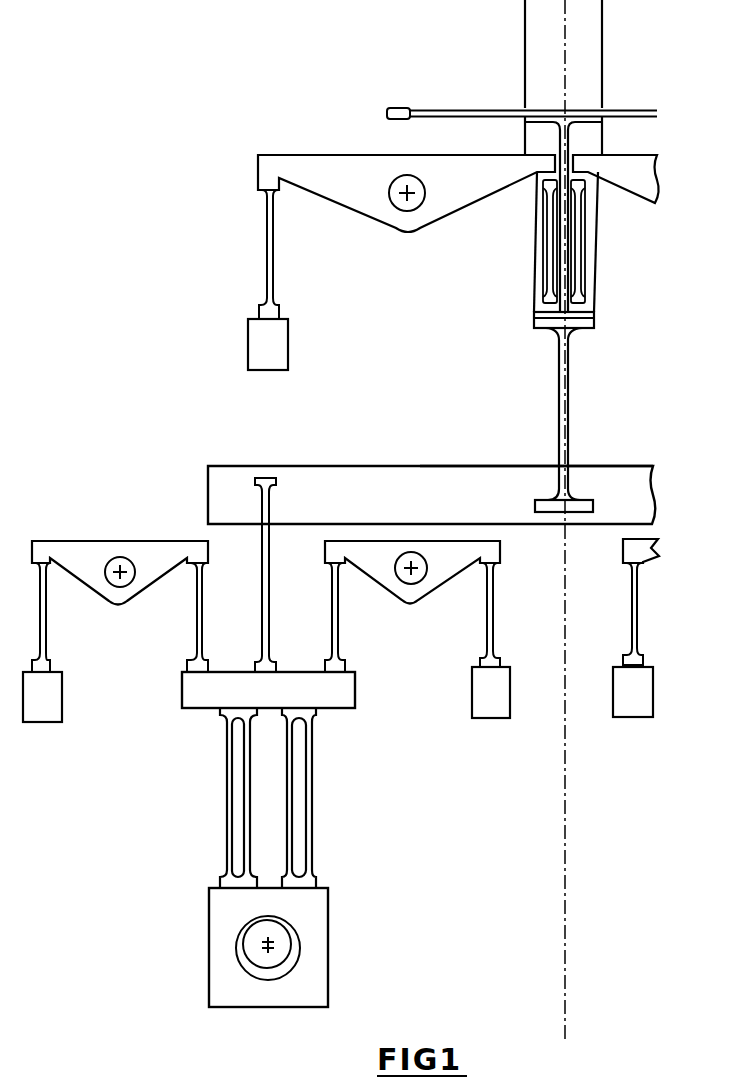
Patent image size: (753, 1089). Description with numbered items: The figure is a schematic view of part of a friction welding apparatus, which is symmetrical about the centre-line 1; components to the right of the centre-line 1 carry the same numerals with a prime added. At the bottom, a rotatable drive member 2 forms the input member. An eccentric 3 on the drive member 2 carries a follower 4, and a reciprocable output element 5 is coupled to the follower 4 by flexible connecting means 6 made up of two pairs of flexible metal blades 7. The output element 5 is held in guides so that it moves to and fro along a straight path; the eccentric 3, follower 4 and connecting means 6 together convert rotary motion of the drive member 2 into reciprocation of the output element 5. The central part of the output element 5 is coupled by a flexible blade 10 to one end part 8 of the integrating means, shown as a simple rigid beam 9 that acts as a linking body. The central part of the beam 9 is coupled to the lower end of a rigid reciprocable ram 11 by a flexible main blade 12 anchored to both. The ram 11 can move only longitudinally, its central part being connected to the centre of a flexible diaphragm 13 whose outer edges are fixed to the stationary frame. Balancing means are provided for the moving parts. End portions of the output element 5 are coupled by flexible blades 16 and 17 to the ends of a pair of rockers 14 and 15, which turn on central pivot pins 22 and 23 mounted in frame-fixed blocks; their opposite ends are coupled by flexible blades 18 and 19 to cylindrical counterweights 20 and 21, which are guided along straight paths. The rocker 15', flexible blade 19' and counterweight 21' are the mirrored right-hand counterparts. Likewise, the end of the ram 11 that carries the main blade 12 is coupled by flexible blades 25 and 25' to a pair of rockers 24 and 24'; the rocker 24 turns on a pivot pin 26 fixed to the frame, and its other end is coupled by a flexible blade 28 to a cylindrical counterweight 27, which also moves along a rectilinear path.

The centre-line 1 is at (570, 873).
The rotatable drive member 2 is at (262, 937).
The eccentric 3 is at (262, 970).
The follower 4 is at (308, 980).
The reciprocable output element 5 is at (345, 690).
The flexible connecting means 6 is at (283, 798).
The flexible metal blades 7 is at (230, 815).
The end part of integrating means 8 is at (224, 466).
The rigid beam 9 is at (477, 487).
The flexible blade 10 is at (270, 594).
The rigid reciprocable ram 11 is at (598, 238).
The flexible main blade 12 is at (570, 437).
The flexible diaphragm 13 is at (465, 110).
The rocker 14 is at (150, 558).
The rocker 15 is at (412, 582).
The rocker 15' is at (668, 561).
The flexible blade 16 is at (205, 600).
The flexible blade 17 is at (340, 622).
The flexible blade 18 is at (46, 638).
The flexible blade 19 is at (515, 615).
The flexible blade 19' is at (664, 614).
The cylindrical counterweight 20 is at (50, 692).
The cylindrical counterweight 21 is at (512, 706).
The cylindrical counterweight 21' is at (661, 692).
The pivot pin 22 is at (115, 557).
The pivot pin 23 is at (415, 580).
The rocker 24 is at (406, 160).
The rocker 24' is at (636, 159).
The flexible blade 25 is at (516, 241).
The flexible blade 25' is at (621, 241).
The pivot pin 26 is at (396, 207).
The cylindrical counterweight 27 is at (258, 342).
The flexible blade 28 is at (266, 258).